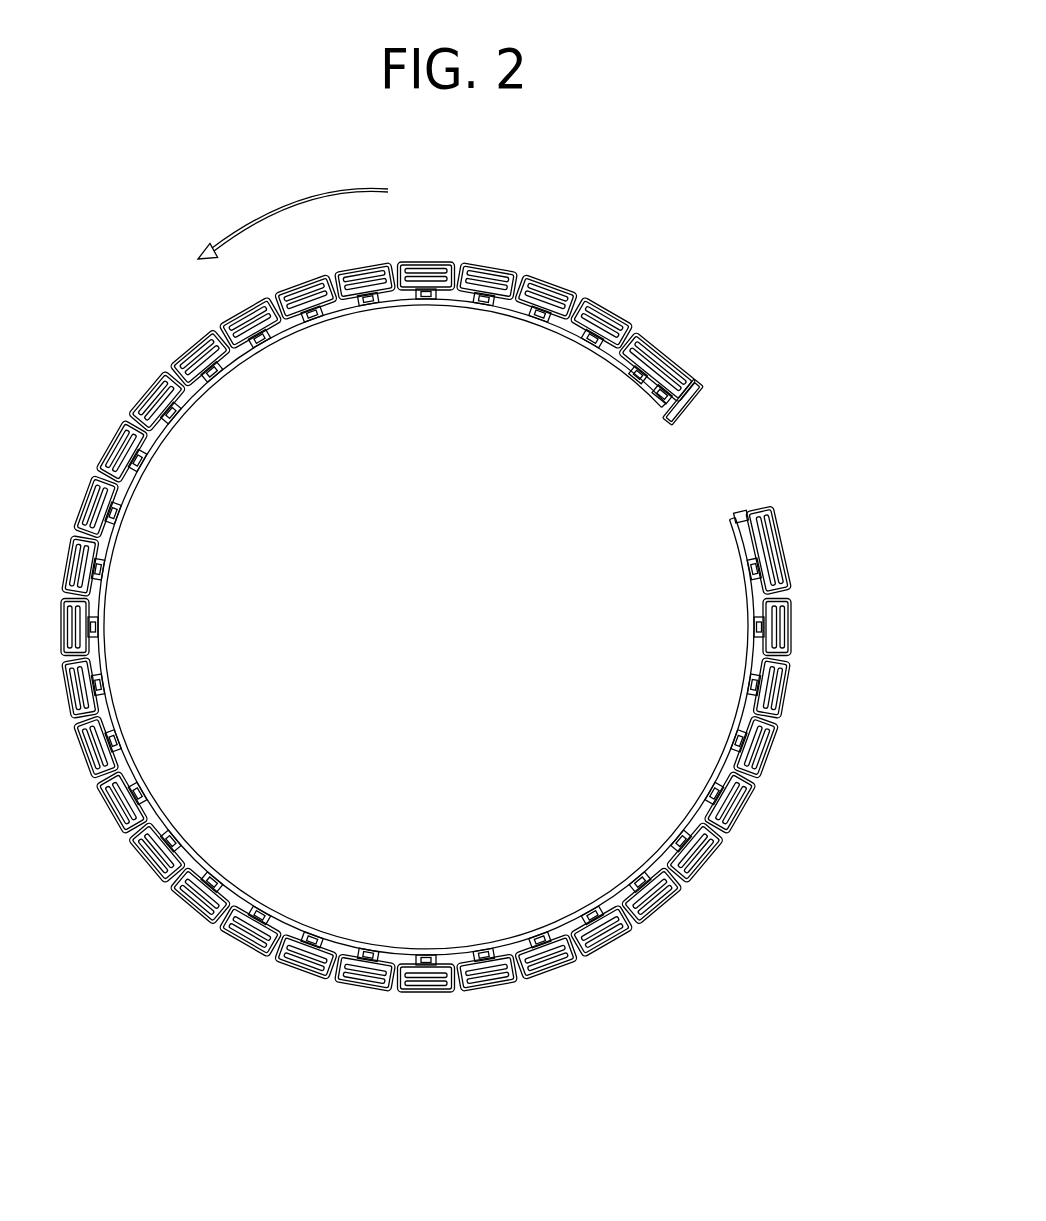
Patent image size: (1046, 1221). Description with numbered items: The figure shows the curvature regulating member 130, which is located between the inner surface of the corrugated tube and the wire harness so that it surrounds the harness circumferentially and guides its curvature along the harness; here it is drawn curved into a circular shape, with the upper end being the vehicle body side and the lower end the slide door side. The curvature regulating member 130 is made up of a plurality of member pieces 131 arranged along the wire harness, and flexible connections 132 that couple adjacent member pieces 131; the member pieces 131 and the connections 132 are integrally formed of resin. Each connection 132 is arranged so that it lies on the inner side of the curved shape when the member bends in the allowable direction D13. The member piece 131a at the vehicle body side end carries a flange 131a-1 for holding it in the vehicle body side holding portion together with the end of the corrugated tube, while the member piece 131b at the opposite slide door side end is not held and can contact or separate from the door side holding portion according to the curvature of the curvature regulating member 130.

The curvature regulating member 130 is at (102, 239).
The member piece 131 is at (497, 262).
The member piece at the vehicle body side 131a is at (660, 343).
The flange 131a-1 is at (712, 376).
The member piece at the slide door side 131b is at (787, 521).
The connection 132 is at (502, 302).
The allowable direction D13 is at (293, 201).